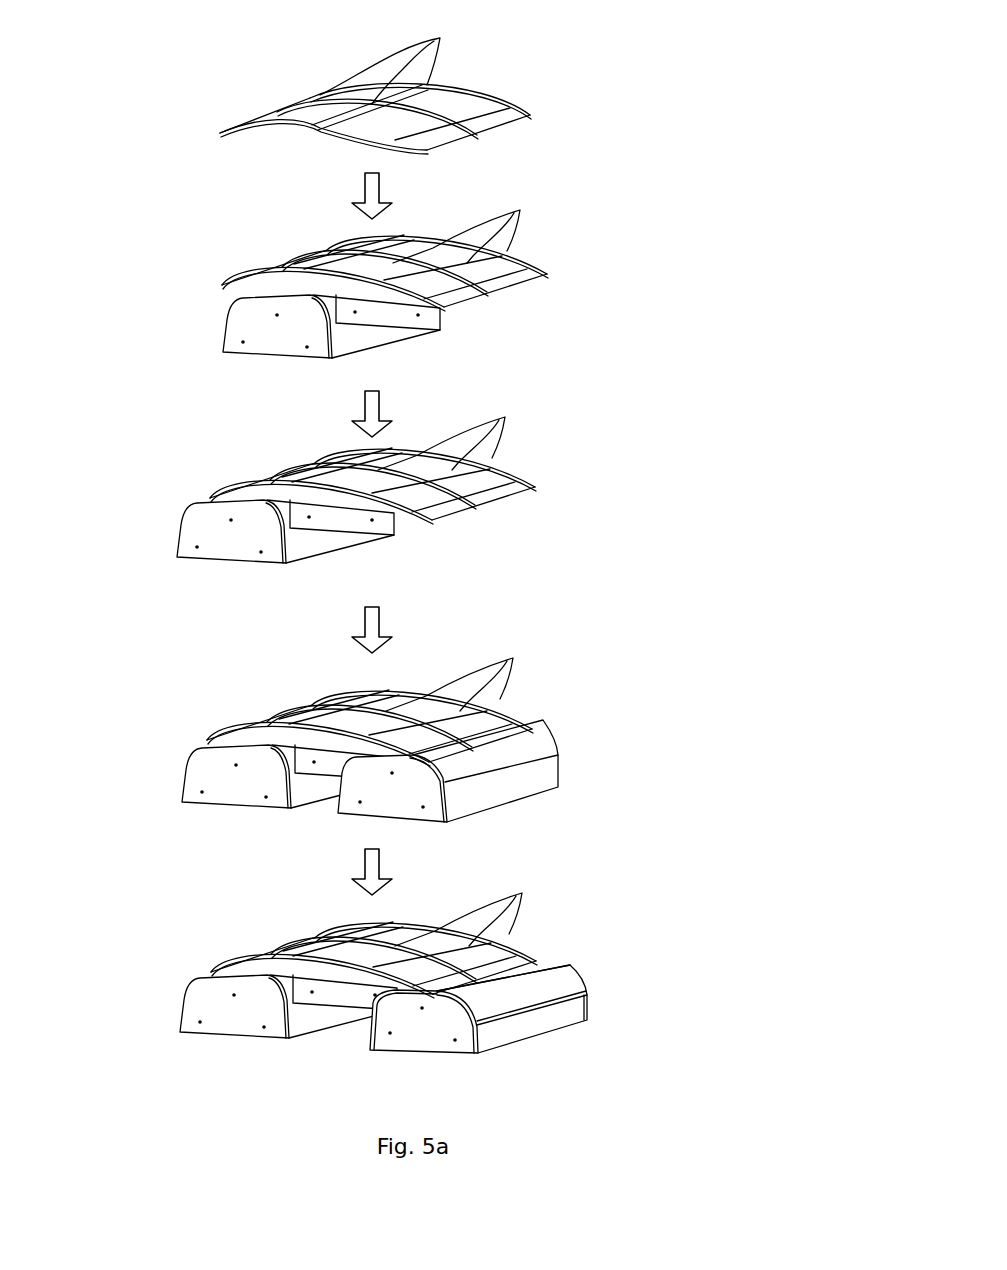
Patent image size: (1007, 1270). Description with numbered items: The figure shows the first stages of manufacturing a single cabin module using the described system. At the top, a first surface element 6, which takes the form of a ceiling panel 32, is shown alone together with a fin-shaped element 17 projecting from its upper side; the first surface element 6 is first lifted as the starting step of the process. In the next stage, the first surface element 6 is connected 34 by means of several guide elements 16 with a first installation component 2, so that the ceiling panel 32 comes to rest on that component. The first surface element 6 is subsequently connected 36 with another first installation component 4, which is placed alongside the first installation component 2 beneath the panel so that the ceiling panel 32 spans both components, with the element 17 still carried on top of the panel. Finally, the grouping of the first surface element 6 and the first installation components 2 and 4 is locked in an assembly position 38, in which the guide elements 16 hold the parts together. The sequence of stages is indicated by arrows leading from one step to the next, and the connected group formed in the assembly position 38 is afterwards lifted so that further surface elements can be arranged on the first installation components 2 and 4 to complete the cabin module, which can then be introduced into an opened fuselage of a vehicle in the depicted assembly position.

The first installation component 2 is at (233, 338).
The another first installation component 4 is at (552, 784).
The first surface element 6 is at (487, 97).
The guide elements 16 is at (257, 297).
The fin 17 is at (438, 486).
The ceiling panel 32 is at (674, 273).
The connecting step 34 is at (674, 462).
The subsequent connecting step 36 is at (674, 722).
The assembly position 38 is at (674, 974).